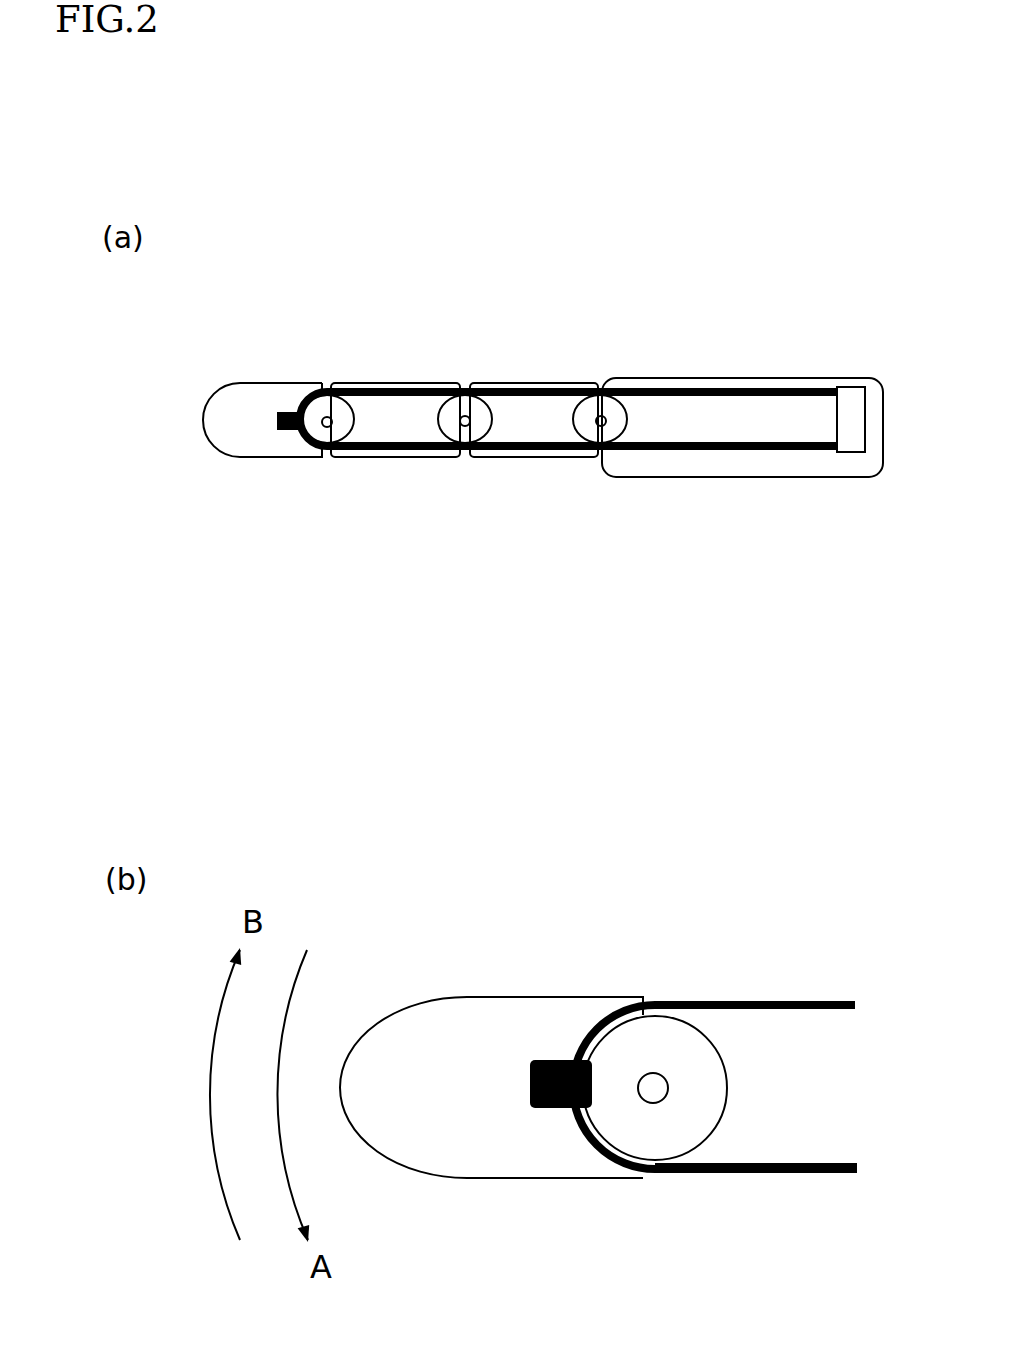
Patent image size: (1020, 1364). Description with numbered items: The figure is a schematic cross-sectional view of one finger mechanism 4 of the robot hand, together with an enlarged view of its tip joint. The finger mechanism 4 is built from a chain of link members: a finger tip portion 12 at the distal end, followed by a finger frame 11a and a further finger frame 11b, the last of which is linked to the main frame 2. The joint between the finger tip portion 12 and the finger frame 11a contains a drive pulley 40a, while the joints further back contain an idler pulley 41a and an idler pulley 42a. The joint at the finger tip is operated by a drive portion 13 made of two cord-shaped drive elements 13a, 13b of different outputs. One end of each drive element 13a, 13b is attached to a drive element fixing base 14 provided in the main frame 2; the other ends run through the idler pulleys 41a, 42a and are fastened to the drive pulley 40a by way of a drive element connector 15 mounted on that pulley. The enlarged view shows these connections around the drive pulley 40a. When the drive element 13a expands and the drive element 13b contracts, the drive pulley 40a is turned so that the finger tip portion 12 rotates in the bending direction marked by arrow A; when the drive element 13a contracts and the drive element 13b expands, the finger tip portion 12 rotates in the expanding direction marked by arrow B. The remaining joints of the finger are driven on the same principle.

The main frame 2 is at (884, 396).
The finger mechanism 4 is at (400, 330).
The finger frame 11a is at (398, 428).
The finger frame 11b is at (536, 426).
The finger tip portion 12 is at (232, 448).
The drive portion 13 is at (682, 452).
The drive element 13a is at (752, 391).
The drive element 13b is at (780, 452).
The drive element fixing base 14 is at (850, 444).
The drive element connector 15 is at (287, 433).
The drive pulley 40a is at (313, 411).
The idler pulley 41a is at (483, 417).
The idler pulley 42a is at (604, 416).